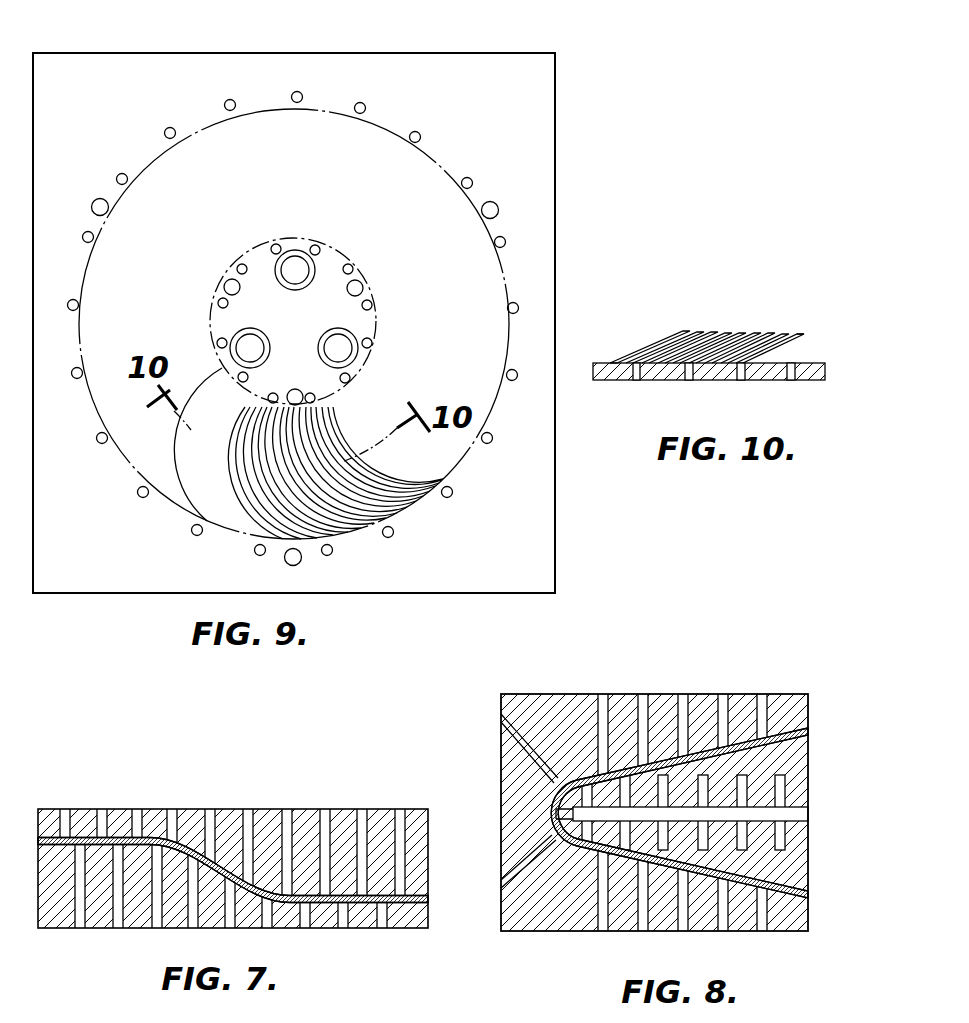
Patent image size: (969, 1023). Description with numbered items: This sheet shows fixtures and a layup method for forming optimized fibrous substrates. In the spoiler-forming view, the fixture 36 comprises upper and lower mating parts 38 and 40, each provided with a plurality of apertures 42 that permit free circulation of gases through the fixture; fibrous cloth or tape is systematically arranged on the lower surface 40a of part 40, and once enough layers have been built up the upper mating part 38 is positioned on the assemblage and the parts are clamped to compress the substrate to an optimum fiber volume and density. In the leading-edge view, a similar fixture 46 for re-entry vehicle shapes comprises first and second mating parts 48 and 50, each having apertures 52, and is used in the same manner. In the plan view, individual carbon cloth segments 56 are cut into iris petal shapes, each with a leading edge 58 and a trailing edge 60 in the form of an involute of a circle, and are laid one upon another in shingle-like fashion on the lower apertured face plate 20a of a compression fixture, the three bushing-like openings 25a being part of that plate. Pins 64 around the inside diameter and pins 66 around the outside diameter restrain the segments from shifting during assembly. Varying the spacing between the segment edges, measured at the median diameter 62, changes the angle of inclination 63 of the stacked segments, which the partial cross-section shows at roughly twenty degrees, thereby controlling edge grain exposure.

In FIG. 9, the lower apertured face plate 20a is at (538, 148).
In FIG. 10, the lower apertured face plate 20a is at (672, 383).
In FIG. 9, the pins 66 is at (236, 101).
In FIG. 9, the pins 64 is at (280, 245).
In FIG. 9, the bushing openings 25a is at (253, 345).
In FIG. 9, the trailing edge 60 is at (180, 441).
In FIG. 10, the trailing edge 60 is at (608, 361).
In FIG. 9, the leading edge 58 is at (224, 471).
In FIG. 10, the leading edge 58 is at (678, 330).
In FIG. 9, the cloth segments 56 is at (268, 516).
In FIG. 10, the cloth segments 56 is at (753, 324).
In FIG. 9, the median diameter 62 is at (380, 443).
In FIG. 10, the angle of inclination 63 is at (800, 361).
In FIG. 7, the fixture 36 is at (378, 804).
In FIG. 7, the upper mating part 38 is at (277, 807).
In FIG. 7, the lower mating part 40 is at (143, 929).
In FIG. 7, the lower surface 40a is at (418, 892).
In FIG. 7, the apertures 42 is at (177, 816).
In FIG. 8, the fixture 46 is at (742, 700).
In FIG. 8, the first mating part 48 is at (702, 680).
In FIG. 8, the second mating part 50 is at (809, 772).
In FIG. 8, the apertures 52 is at (743, 847).